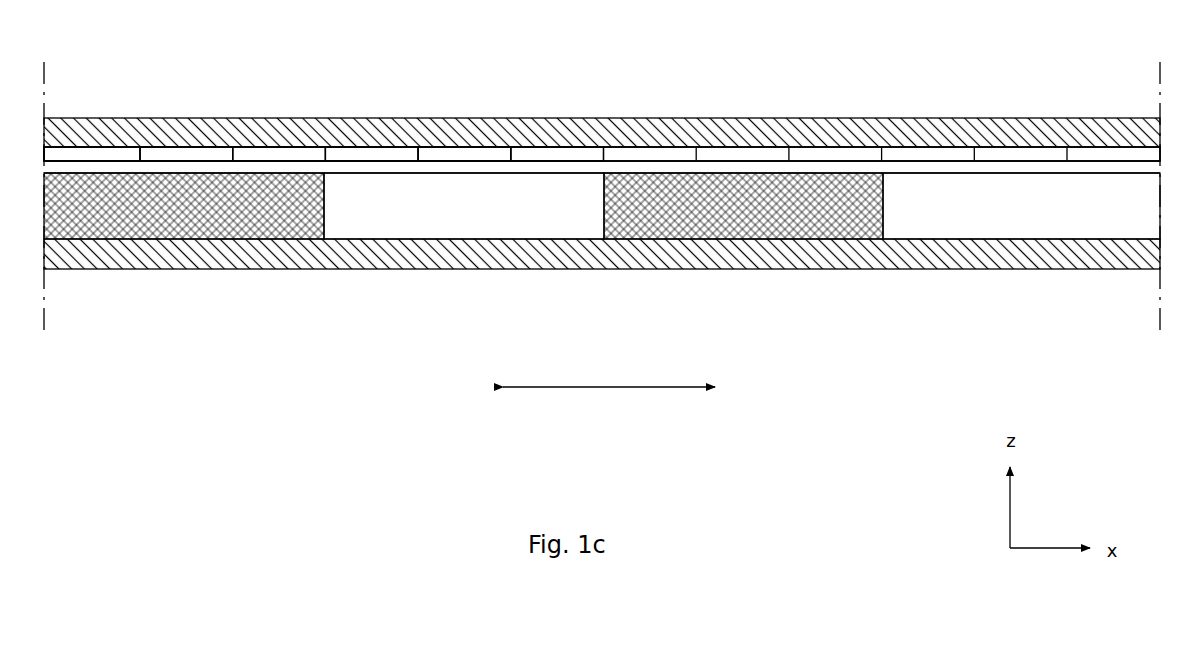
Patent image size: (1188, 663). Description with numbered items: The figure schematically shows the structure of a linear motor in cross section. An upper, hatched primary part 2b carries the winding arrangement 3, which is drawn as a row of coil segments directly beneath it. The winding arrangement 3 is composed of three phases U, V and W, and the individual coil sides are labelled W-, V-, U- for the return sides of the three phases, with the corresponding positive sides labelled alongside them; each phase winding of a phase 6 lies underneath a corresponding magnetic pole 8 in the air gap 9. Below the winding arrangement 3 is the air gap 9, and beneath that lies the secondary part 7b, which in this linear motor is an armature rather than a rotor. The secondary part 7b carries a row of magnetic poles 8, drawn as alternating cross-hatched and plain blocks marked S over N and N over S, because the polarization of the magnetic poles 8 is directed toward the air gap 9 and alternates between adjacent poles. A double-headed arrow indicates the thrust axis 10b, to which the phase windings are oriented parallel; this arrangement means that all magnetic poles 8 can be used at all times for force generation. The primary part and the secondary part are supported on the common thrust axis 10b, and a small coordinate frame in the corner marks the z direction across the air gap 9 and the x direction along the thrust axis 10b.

The primary part 2b is at (815, 132).
The winding arrangement 3 is at (1128, 153).
The phase 6 is at (1128, 153).
The phase W negative coil side W- is at (93, 153).
The phase V negative coil side V- is at (187, 153).
The phase U negative coil side U- is at (277, 153).
The air gap 9 is at (58, 167).
The magnetic poles 8 is at (389, 223).
The secondary part 7b is at (713, 249).
The thrust axis 10b is at (609, 409).